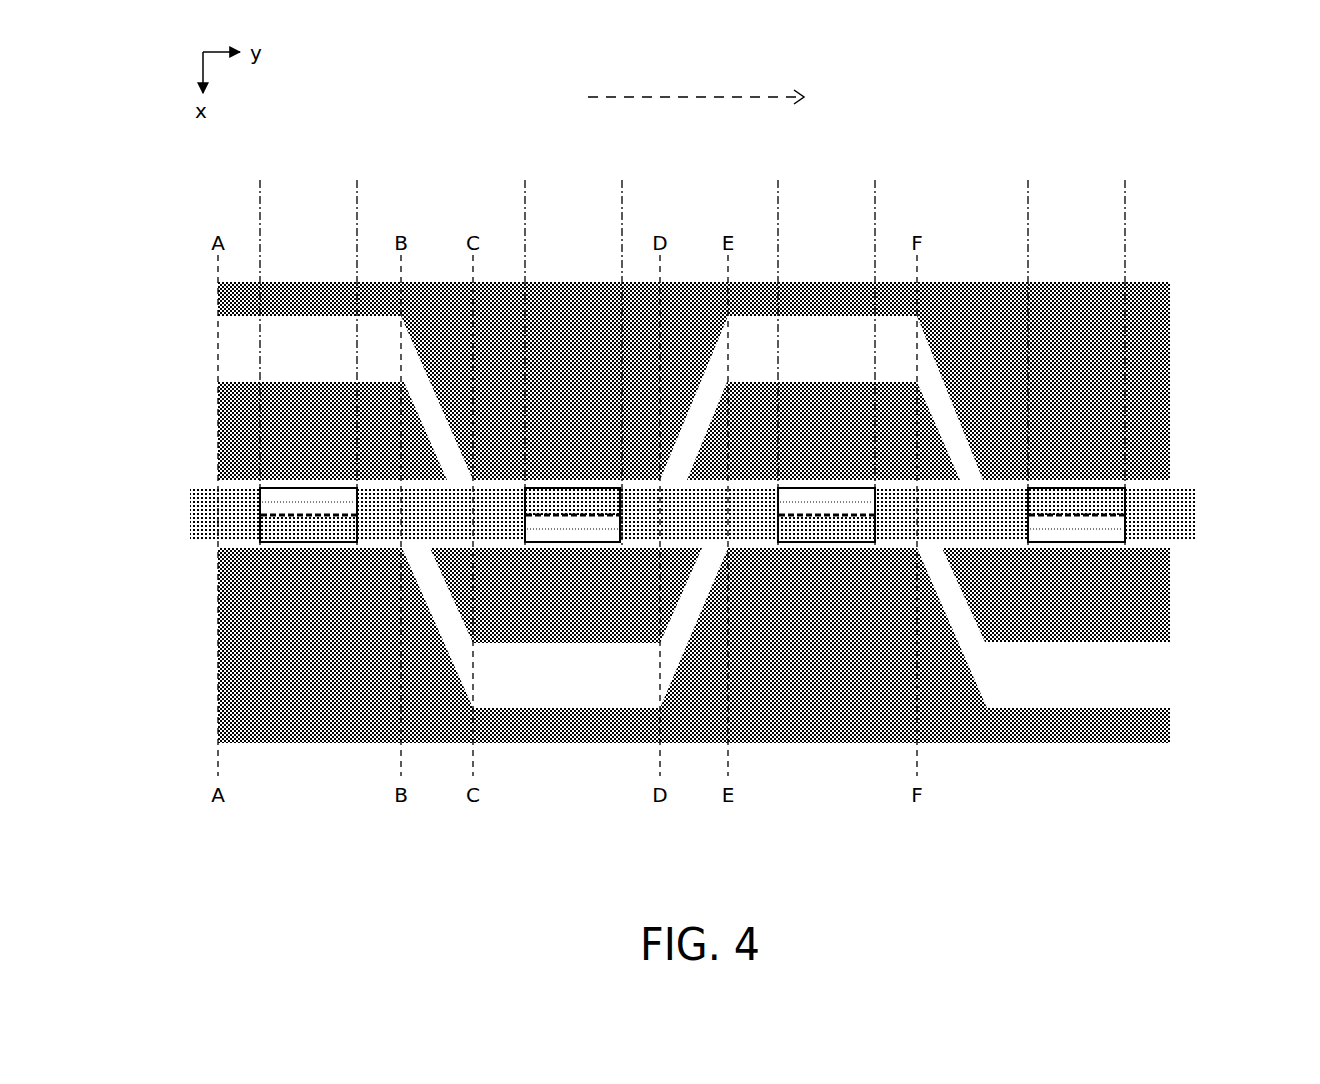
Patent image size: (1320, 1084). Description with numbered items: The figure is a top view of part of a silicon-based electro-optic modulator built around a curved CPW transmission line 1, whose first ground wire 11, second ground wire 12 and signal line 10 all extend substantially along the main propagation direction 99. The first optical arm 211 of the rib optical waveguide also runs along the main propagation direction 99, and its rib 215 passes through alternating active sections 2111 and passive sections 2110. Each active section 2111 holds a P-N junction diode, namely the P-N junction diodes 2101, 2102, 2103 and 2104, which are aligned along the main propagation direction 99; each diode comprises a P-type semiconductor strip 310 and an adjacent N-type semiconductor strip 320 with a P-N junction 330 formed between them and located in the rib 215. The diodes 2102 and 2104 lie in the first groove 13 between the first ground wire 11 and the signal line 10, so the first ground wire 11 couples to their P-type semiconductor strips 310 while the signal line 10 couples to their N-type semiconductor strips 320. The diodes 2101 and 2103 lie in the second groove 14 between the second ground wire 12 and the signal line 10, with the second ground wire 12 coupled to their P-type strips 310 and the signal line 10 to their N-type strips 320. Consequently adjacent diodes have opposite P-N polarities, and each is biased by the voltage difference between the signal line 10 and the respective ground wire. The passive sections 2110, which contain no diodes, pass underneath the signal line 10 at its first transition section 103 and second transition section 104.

The curved CPW transmission line 1 is at (1230, 165).
The signal line 10 is at (210, 432).
The first ground wire 11 is at (210, 297).
The second ground wire 12 is at (1173, 728).
The first groove 13 is at (210, 352).
The second groove 14 is at (1173, 680).
The main propagation direction 99 is at (672, 97).
The first transition section 103 is at (446, 552).
The second transition section 104 is at (678, 552).
The first optical arm 211 is at (182, 489).
The rib 215 is at (1199, 489).
The P-type semiconductor strip 310 is at (692, 515).
The N-type semiconductor strip 320 is at (692, 515).
The P-N junction 330 is at (273, 515).
The P-N junction diode 2101 is at (285, 745).
The P-N junction diode 2102 is at (550, 285).
The P-N junction diode 2103 is at (802, 740).
The P-N junction diode 2104 is at (1053, 285).
The passive sections 2110 is at (360, 212).
The active sections 2111 is at (354, 195).